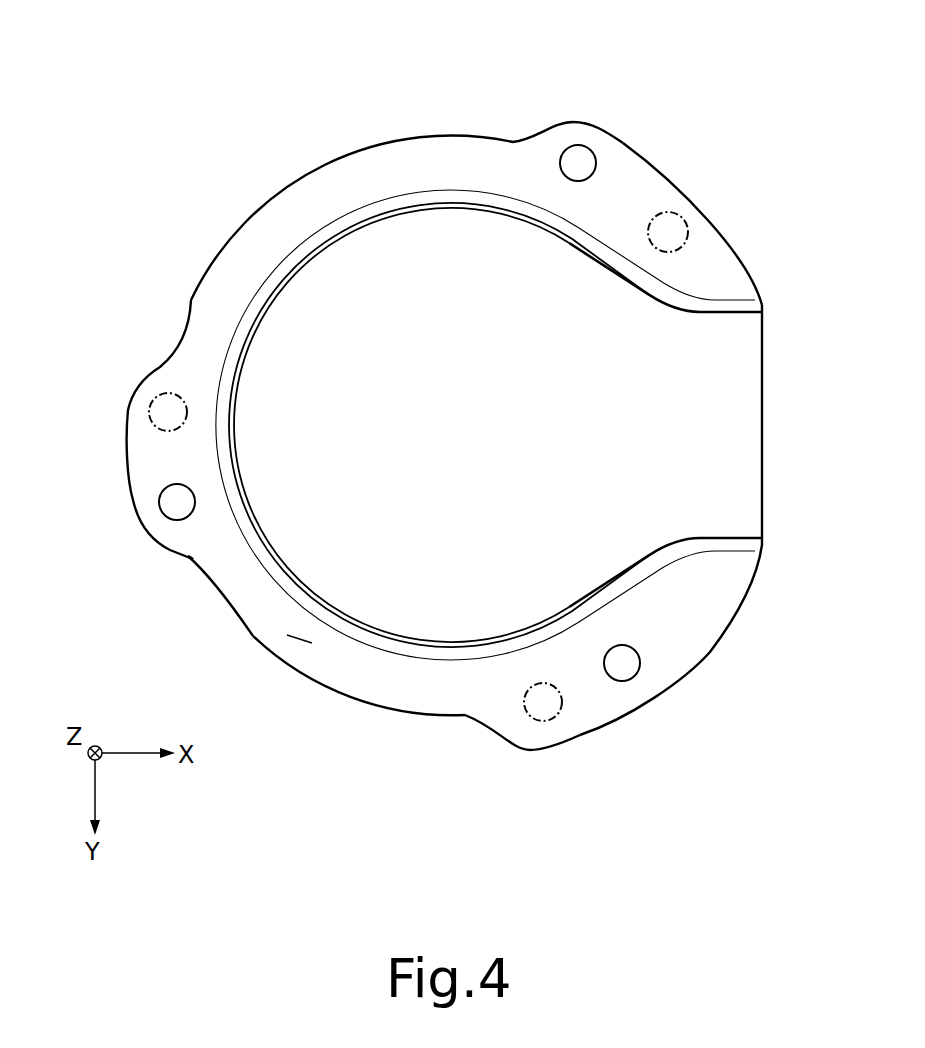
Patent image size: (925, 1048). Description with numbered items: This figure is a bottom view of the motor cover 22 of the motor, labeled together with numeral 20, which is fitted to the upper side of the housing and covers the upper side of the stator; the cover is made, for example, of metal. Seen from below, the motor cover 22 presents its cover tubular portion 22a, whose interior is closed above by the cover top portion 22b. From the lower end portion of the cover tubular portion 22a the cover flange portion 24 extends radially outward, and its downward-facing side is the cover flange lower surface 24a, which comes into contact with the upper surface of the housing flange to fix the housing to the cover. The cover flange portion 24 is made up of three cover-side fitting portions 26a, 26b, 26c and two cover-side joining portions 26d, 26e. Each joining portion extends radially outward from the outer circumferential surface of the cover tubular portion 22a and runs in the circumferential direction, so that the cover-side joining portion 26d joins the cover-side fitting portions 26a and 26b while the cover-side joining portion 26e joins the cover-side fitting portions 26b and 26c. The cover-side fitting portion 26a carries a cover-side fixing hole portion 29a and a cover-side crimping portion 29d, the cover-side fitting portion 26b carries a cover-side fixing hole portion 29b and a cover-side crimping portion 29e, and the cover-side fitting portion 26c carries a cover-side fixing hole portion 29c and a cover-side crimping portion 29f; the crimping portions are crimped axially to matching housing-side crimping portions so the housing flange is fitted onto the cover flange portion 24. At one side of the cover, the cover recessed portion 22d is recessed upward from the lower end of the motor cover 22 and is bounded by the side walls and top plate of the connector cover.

The clamp assembly 20 is at (449, 436).
The motor cover 22 is at (740, 138).
The cover tubular portion 22a is at (283, 287).
The cover top portion 22b is at (445, 300).
The cover recessed portion 22d is at (762, 322).
The cover flange portion 24 is at (437, 692).
The cover flange lower surface 24a is at (288, 643).
The cover-side fitting portion 26a is at (633, 188).
The cover-side fitting portion 26b is at (152, 463).
The cover-side fitting portion 26c is at (680, 623).
The cover-side joining portion 26d is at (429, 163).
The cover-side joining portion 26e is at (368, 685).
The cover-side fixing hole portion 29a is at (585, 165).
The cover-side fixing hole portion 29b is at (177, 505).
The cover-side fixing hole portion 29c is at (627, 670).
The cover-side crimping portion 29d is at (677, 230).
The cover-side crimping portion 29e is at (170, 410).
The cover-side crimping portion 29f is at (543, 703).